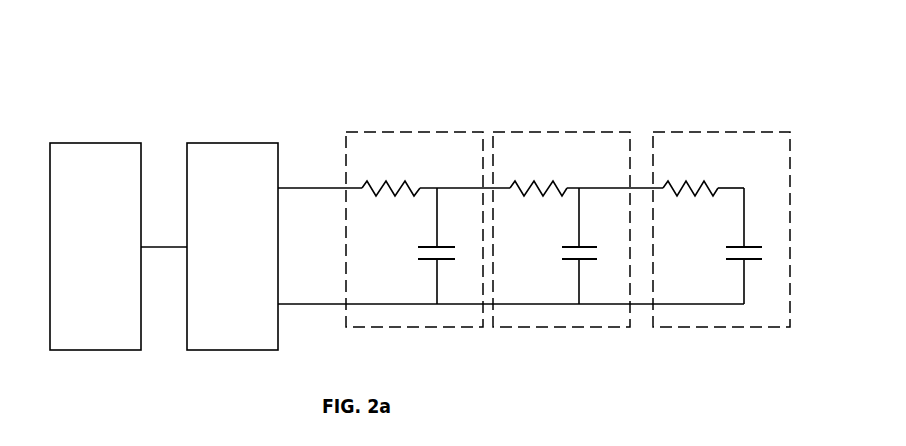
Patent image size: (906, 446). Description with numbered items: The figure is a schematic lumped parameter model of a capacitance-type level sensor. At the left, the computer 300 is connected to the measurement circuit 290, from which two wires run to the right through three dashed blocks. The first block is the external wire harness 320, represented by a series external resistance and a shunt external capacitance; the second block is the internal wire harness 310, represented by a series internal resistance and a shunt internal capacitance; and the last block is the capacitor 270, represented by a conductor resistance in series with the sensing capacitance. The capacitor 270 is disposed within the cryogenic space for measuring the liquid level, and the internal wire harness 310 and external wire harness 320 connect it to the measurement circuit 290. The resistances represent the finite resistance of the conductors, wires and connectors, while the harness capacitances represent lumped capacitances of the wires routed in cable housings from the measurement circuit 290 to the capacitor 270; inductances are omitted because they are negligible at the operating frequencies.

The computer 300 is at (85, 143).
The measurement circuit 290 is at (225, 143).
The external wire harness 320 is at (405, 132).
The internal wire harness 310 is at (540, 132).
The capacitor 270 is at (675, 132).